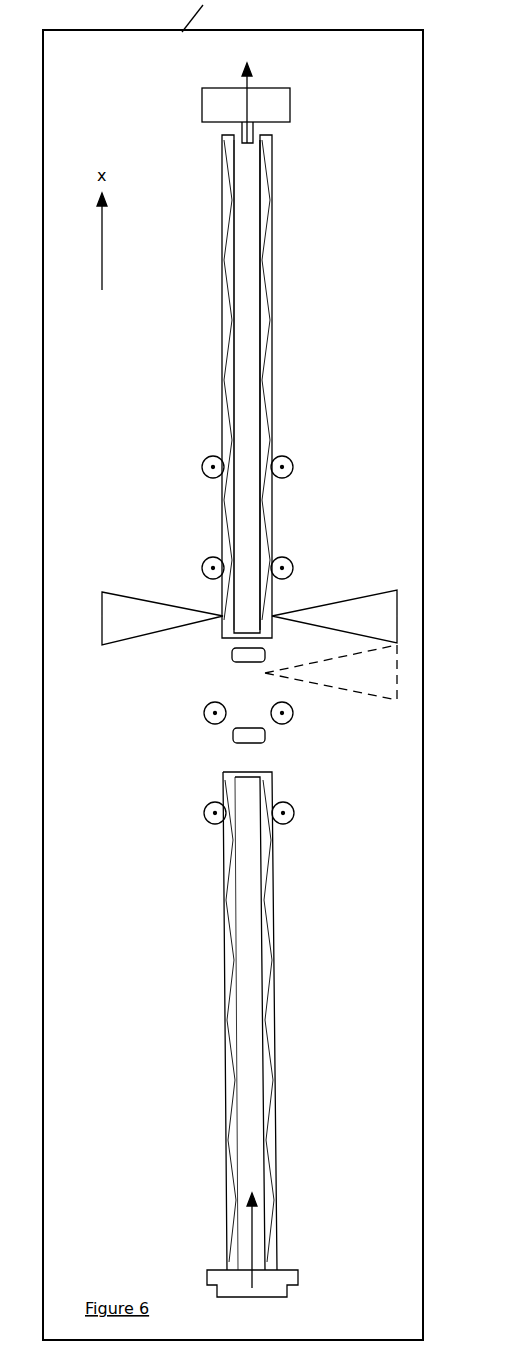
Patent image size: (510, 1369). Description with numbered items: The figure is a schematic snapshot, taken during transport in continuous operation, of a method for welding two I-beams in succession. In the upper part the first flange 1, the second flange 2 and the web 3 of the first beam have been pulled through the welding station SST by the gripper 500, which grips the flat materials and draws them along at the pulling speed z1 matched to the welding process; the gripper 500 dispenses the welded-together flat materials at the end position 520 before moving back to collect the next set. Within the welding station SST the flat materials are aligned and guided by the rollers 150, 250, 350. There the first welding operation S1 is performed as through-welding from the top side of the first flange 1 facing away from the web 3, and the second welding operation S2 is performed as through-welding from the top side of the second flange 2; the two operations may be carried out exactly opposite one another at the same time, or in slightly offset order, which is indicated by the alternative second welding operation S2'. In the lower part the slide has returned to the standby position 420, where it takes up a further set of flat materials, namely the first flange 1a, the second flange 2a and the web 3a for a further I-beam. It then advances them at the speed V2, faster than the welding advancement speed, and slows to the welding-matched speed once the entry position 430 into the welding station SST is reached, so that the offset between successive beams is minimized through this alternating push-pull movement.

The first flange 1 is at (228, 230).
The second flange 2 is at (265, 245).
The web 3 is at (247, 208).
The first flange 1a is at (230, 1002).
The second flange 2a is at (272, 992).
The web 3a is at (255, 1065).
The rollers 150 is at (205, 478).
The rollers 250 is at (290, 478).
The rollers 350 is at (232, 656).
The standby position 420 is at (300, 1270).
The entry position 430 is at (243, 690).
The gripper 500 is at (293, 110).
The end position 520 is at (260, 42).
The first welding operation S1 is at (130, 597).
The second welding operation S2 is at (334, 598).
The second welding operation S2' is at (331, 683).
The welding station SST is at (140, 791).
The speed V2 is at (255, 1240).
The pulling speed z1 is at (245, 103).